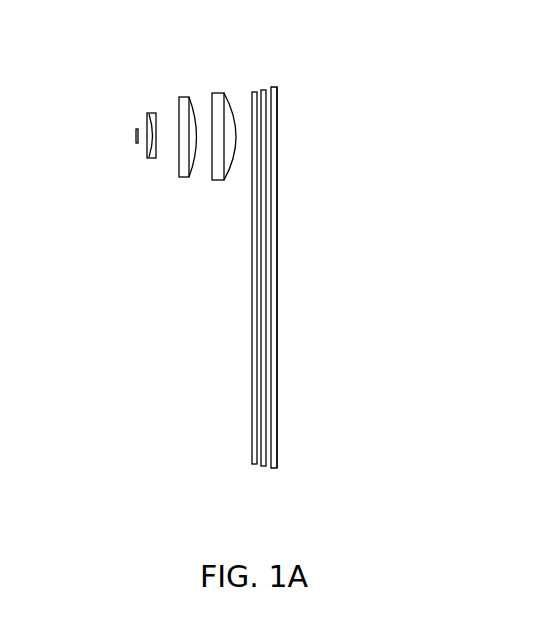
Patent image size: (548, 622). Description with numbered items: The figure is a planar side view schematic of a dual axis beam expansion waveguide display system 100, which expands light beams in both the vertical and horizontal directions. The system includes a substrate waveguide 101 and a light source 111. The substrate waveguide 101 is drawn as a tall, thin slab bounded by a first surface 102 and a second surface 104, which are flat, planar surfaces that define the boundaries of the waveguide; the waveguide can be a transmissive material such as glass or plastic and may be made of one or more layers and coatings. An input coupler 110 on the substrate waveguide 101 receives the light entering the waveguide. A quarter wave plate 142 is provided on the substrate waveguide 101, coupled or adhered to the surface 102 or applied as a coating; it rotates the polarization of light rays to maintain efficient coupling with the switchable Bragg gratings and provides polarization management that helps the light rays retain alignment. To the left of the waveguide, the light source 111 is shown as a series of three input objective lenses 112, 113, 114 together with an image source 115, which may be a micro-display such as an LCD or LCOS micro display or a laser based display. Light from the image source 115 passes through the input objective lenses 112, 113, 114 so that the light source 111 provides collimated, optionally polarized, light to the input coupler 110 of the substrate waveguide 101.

The waveguide display system 100 is at (330, 202).
The substrate waveguide 101 is at (265, 464).
The first surface 102 is at (252, 350).
The second surface 104 is at (268, 108).
The input coupler 110 is at (257, 261).
The light source 111 is at (166, 145).
The input objective lens 112 is at (149, 159).
The input objective lens 113 is at (183, 178).
The input objective lens 114 is at (216, 181).
The image source 115 is at (135, 136).
The quarter wave plate 142 is at (278, 255).